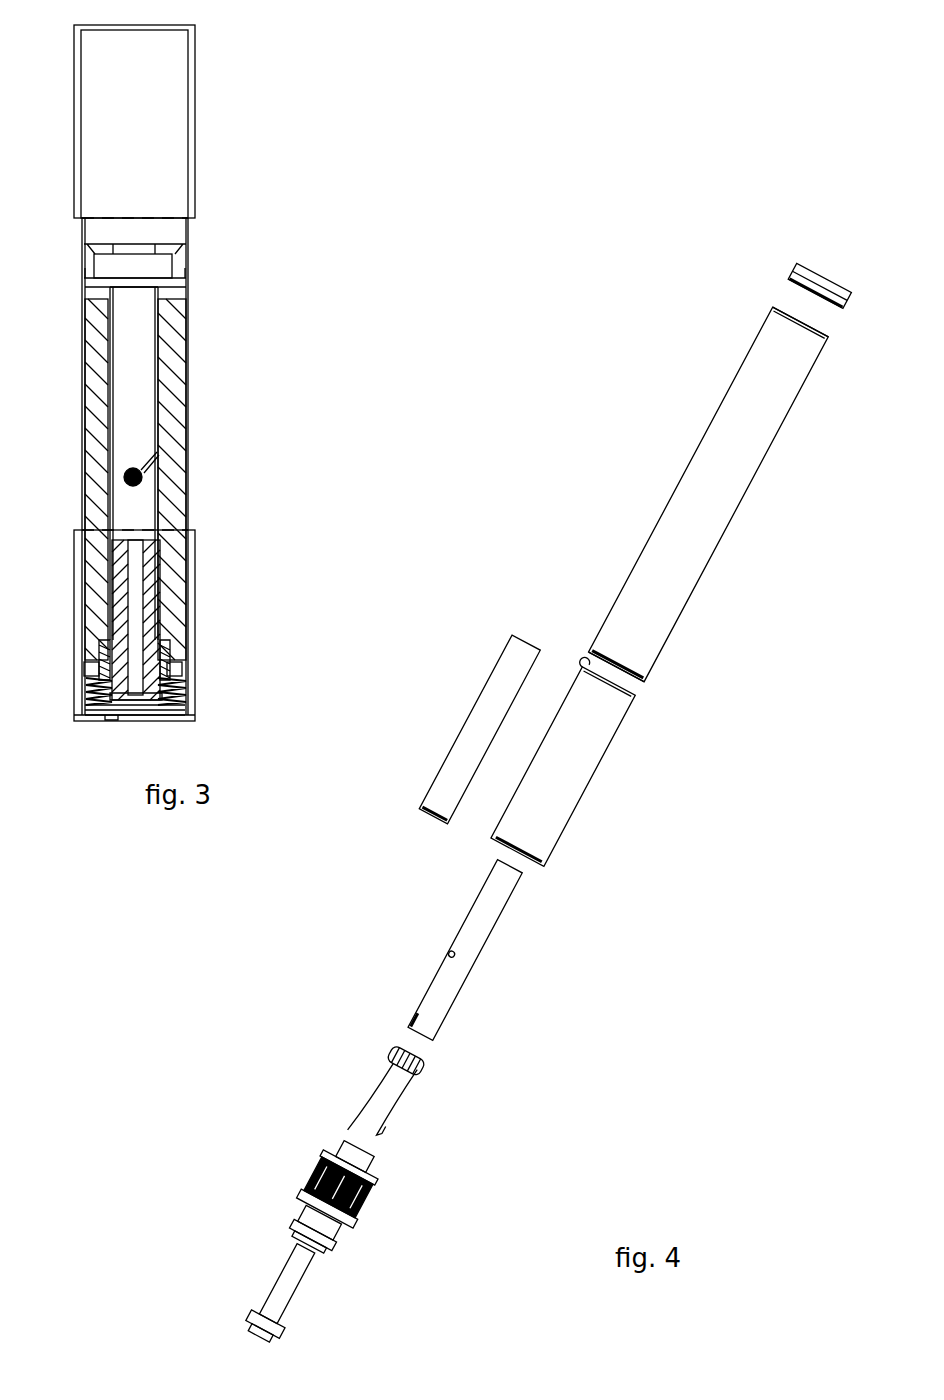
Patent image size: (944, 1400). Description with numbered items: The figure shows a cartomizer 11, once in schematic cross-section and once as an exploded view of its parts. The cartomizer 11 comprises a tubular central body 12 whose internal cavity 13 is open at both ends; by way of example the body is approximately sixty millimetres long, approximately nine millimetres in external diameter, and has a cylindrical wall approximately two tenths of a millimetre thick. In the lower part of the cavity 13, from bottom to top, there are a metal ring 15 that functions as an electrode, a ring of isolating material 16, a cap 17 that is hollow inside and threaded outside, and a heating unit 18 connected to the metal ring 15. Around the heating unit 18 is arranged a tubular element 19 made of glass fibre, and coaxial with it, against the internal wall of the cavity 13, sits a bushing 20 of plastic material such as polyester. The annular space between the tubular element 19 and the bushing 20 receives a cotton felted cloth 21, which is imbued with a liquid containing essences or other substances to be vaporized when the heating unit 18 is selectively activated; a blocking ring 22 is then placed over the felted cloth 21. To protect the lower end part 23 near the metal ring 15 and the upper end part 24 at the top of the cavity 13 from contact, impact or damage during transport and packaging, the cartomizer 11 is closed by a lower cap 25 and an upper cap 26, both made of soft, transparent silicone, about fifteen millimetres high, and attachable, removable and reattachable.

In FIG. 3, the cartomizer 11 is at (222, 300).
In FIG. 4, the cartomizer 11 is at (637, 418).
In FIG. 3, the central body 12 is at (188, 389).
In FIG. 4, the central body 12 is at (643, 545).
In FIG. 3, the internal cavity 13 is at (85, 222).
In FIG. 4, the internal cavity 13 is at (594, 662).
In FIG. 3, the metal ring 15 is at (115, 683).
In FIG. 4, the metal ring 15 is at (255, 1320).
In FIG. 3, the ring of isolating material 16 is at (163, 667).
In FIG. 4, the ring of isolating material 16 is at (313, 1222).
In FIG. 3, the cap 17 is at (172, 692).
In FIG. 4, the cap 17 is at (312, 1165).
In FIG. 4, the heating unit 18 is at (375, 1070).
In FIG. 3, the tubular element 19 is at (158, 428).
In FIG. 4, the tubular element 19 is at (437, 992).
In FIG. 3, the bushing 20 is at (188, 508).
In FIG. 4, the bushing 20 is at (551, 805).
In FIG. 3, the cotton felted cloth 21 is at (172, 328).
In FIG. 4, the cotton felted cloth 21 is at (459, 769).
In FIG. 3, the blocking ring 22 is at (172, 247).
In FIG. 4, the blocking ring 22 is at (813, 285).
In FIG. 4, the lower end part 23 is at (641, 653).
In FIG. 4, the upper end part 24 is at (808, 340).
In FIG. 3, the lower cap 25 is at (190, 601).
In FIG. 3, the upper cap 26 is at (190, 133).